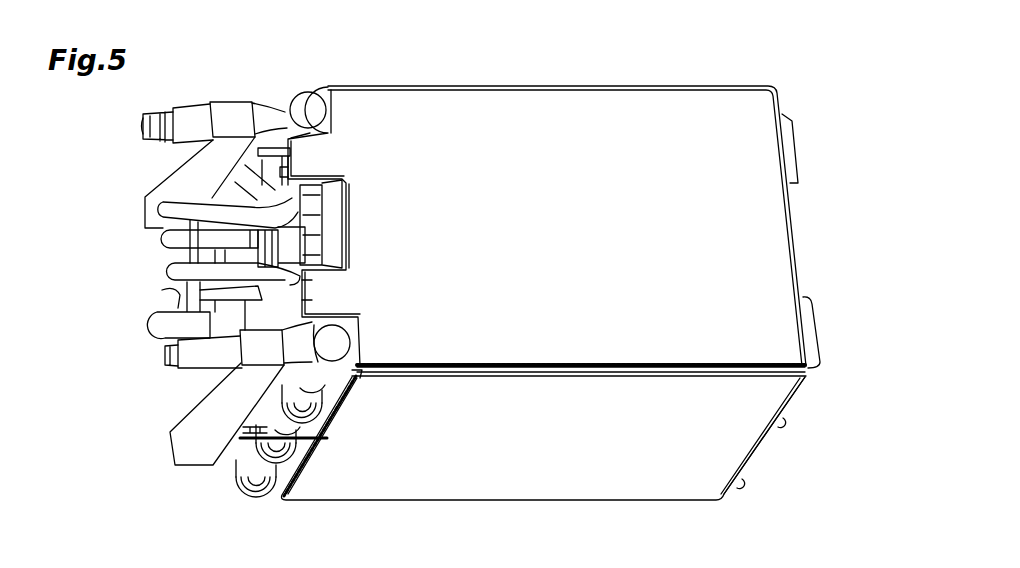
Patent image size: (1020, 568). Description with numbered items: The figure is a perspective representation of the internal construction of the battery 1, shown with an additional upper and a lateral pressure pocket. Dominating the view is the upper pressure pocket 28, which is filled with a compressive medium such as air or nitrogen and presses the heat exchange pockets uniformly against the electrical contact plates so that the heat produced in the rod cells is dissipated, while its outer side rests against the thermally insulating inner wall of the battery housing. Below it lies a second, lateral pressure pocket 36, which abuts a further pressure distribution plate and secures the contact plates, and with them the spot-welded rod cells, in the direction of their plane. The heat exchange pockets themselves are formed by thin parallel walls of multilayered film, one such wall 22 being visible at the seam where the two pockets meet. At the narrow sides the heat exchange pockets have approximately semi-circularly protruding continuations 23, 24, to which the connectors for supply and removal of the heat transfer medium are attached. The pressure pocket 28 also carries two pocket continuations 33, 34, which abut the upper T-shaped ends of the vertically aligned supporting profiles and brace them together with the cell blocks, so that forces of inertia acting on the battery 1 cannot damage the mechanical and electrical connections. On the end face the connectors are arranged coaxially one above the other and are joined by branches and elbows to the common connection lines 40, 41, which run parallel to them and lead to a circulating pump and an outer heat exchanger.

The battery 1 is at (762, 447).
The thin wall 22 is at (358, 373).
The semi-circularly protruding continuation 23 is at (312, 107).
The semi-circularly protruding continuation 24 is at (338, 338).
The pressure pocket 28 is at (595, 103).
The pocket continuation 33 is at (307, 161).
The pocket continuation 34 is at (320, 293).
The pressure pocket 36 is at (530, 477).
The connection line 40 is at (182, 173).
The connection line 41 is at (199, 412).